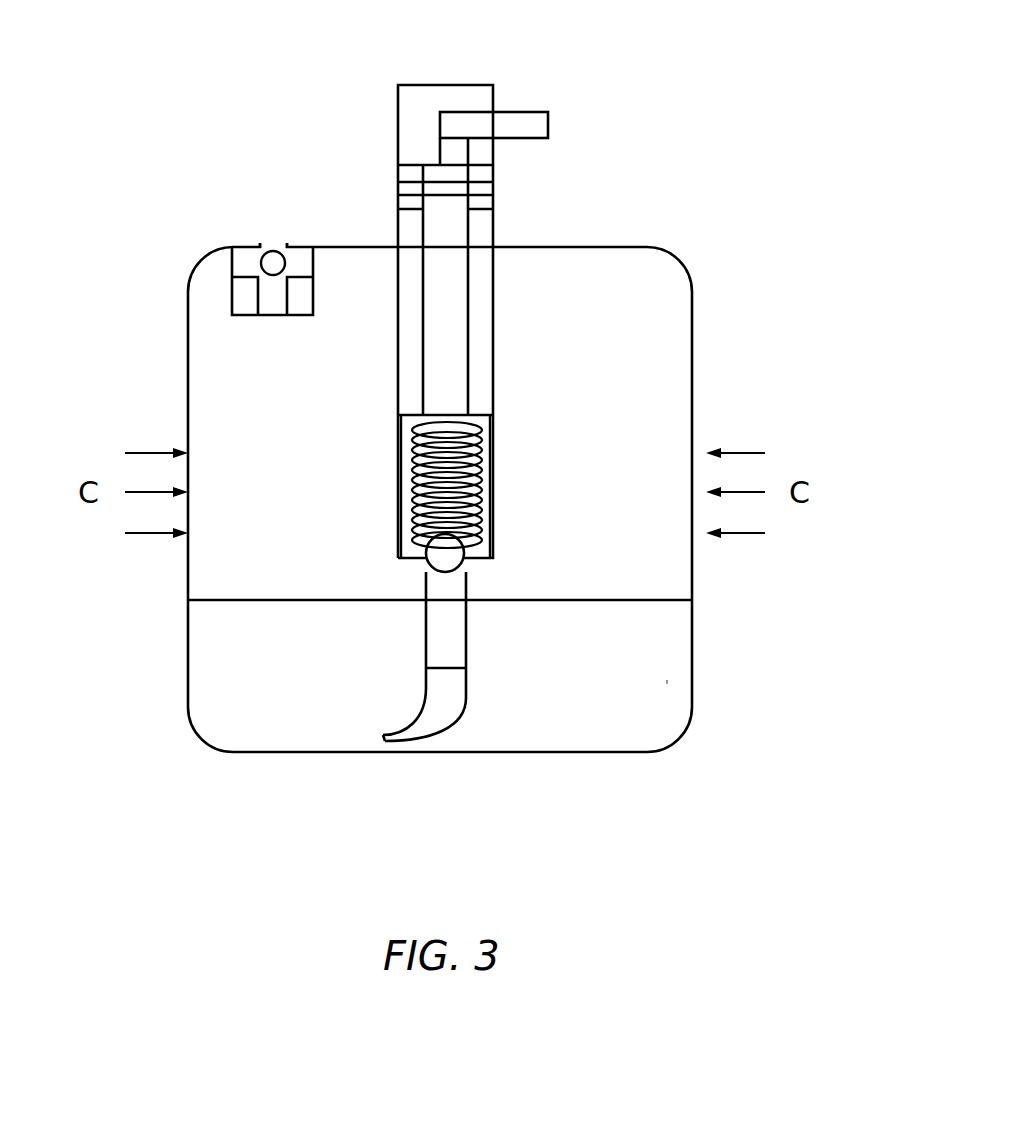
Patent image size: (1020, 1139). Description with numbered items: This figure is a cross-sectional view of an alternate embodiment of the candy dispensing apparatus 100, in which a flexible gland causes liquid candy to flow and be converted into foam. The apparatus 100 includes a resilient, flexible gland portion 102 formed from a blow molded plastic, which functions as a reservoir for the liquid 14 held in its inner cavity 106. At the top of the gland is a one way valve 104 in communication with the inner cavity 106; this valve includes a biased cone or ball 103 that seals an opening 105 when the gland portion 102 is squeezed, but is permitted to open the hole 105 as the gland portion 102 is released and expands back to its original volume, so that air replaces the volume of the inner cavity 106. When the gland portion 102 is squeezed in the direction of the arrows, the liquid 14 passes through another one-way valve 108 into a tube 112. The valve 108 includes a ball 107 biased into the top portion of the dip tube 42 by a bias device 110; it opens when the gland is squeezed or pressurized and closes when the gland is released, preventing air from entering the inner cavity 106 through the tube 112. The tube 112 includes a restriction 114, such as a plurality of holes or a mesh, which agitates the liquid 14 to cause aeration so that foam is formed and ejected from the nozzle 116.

The apparatus 100 is at (872, 152).
The gland portion 102 is at (692, 398).
The biased cone or ball 103 is at (274, 250).
The one way valve 104 is at (233, 232).
The opening 105 is at (262, 247).
The inner cavity 106 is at (245, 553).
The ball 107 is at (427, 566).
The one-way valve 108 is at (495, 556).
The bias device 110 is at (483, 460).
The tube 112 is at (440, 305).
The restriction 114 is at (502, 173).
The nozzle 116 is at (540, 117).
The liquid 14 is at (667, 678).
The dip tube 42 is at (473, 670).